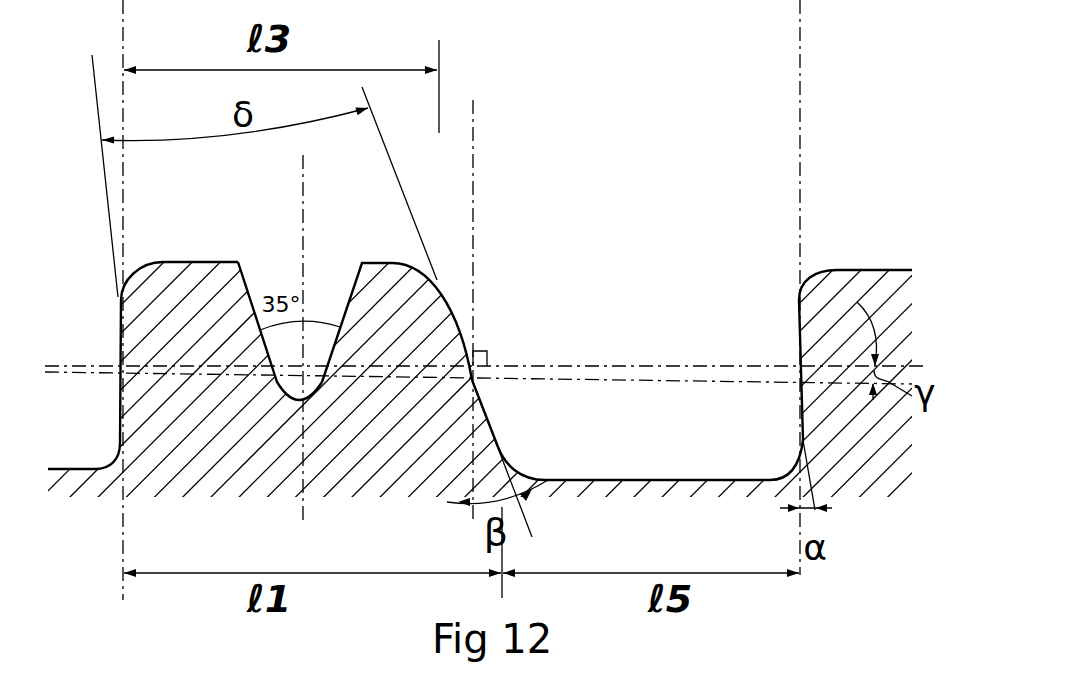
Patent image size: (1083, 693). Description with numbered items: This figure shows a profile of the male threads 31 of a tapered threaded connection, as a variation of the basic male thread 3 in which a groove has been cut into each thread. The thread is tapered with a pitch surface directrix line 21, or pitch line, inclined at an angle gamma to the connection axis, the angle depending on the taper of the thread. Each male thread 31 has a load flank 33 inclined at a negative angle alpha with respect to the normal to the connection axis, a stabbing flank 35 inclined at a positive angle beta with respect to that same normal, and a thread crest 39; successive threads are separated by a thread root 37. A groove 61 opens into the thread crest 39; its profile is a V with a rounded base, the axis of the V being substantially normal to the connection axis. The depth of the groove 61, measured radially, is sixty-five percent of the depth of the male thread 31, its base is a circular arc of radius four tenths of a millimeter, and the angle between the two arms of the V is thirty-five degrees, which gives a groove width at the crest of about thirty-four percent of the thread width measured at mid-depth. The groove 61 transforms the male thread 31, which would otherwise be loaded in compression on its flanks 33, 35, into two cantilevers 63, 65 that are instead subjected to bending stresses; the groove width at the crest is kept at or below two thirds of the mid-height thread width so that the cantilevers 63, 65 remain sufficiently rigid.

The male thread 3 is at (620, 277).
The pitch surface directrix line 21 is at (559, 384).
The male thread 31 is at (383, 440).
The load flank 33 is at (121, 330).
The stabbing flank 35 is at (450, 322).
The thread root 37 is at (656, 480).
The thread crest 39 is at (200, 262).
The groove 61 is at (327, 310).
The cantilever 63 is at (200, 312).
The cantilever 65 is at (385, 308).